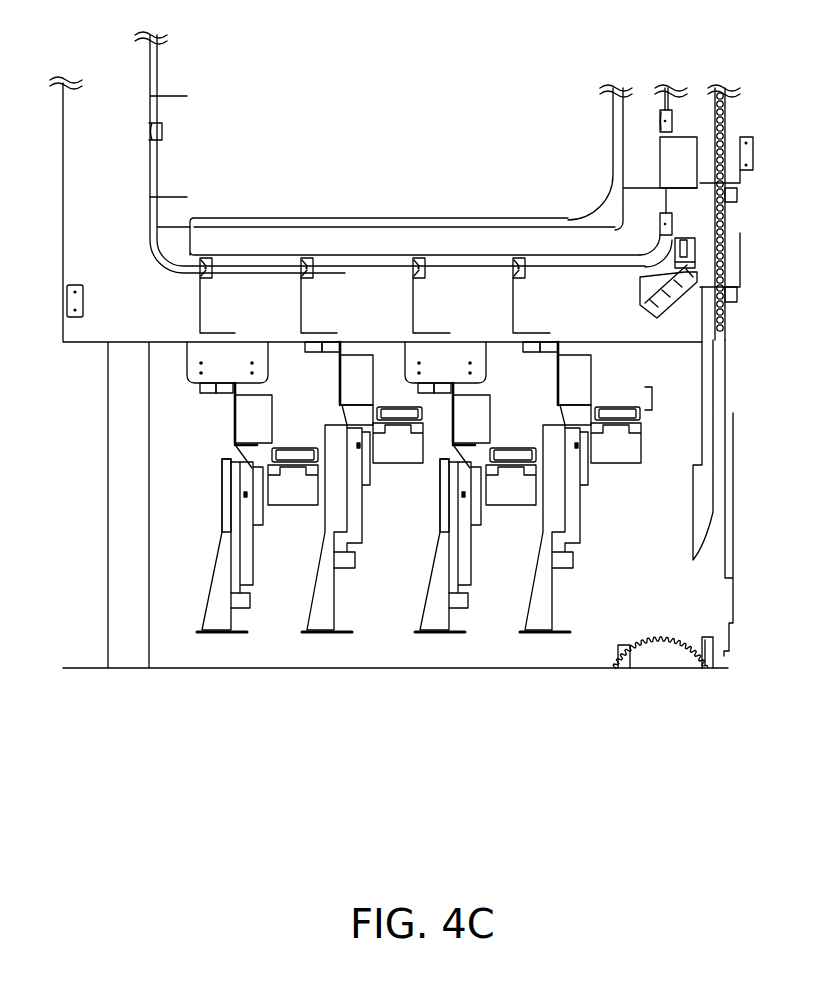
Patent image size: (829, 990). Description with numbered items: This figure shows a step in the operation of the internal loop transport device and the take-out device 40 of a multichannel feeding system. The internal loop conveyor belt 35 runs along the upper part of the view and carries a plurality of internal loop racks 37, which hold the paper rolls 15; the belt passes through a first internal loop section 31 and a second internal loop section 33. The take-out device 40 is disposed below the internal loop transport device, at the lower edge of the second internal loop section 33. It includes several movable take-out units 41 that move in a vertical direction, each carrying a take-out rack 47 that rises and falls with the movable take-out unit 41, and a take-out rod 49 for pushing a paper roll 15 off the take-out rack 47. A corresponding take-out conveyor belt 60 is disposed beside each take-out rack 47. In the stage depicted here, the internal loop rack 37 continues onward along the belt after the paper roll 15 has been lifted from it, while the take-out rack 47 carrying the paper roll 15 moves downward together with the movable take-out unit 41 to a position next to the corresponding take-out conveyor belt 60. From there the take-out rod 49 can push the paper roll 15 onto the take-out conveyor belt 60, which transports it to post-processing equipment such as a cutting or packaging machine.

The paper roll 15 is at (280, 287).
The first internal loop section 31 is at (651, 124).
The second internal loop section 33 is at (404, 263).
The internal loop conveyor belt 35 is at (535, 268).
The internal loop rack 37 is at (168, 197).
The take-out device 40 is at (390, 642).
The movable take-out unit 41 is at (233, 497).
The take-out rack 47 is at (240, 445).
The take-out rod 49 is at (235, 415).
The take-out conveyor belt 60 is at (613, 410).